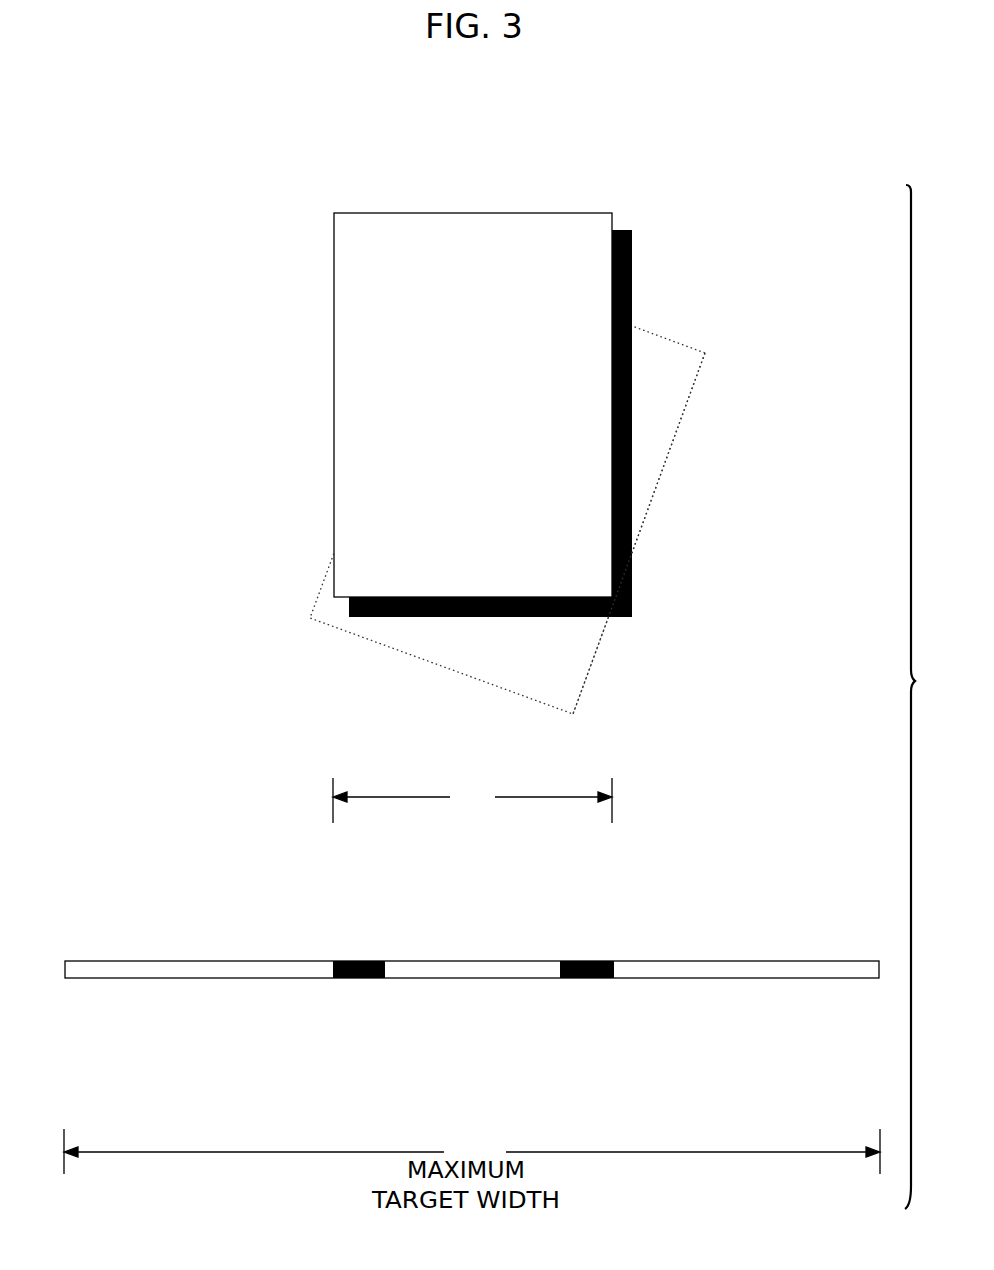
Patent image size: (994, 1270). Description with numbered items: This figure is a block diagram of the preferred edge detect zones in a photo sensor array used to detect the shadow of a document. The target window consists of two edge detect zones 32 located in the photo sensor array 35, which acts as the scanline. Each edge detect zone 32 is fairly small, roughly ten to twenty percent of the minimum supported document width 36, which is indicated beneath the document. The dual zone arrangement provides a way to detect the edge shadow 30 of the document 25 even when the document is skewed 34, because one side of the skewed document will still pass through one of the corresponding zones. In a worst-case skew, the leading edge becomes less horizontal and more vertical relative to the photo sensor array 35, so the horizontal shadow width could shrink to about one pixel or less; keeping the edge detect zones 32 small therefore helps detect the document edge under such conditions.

The document 25 is at (334, 265).
The edge shadow 30 is at (620, 617).
The skewed document 34 is at (503, 687).
The minimum supported document width 36 is at (472, 800).
The photo sensor array 35 is at (147, 978).
The edge detect zone 32 is at (360, 961).